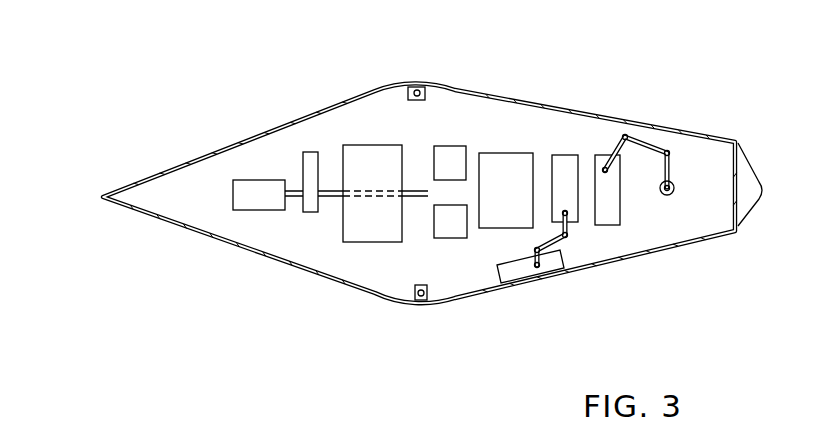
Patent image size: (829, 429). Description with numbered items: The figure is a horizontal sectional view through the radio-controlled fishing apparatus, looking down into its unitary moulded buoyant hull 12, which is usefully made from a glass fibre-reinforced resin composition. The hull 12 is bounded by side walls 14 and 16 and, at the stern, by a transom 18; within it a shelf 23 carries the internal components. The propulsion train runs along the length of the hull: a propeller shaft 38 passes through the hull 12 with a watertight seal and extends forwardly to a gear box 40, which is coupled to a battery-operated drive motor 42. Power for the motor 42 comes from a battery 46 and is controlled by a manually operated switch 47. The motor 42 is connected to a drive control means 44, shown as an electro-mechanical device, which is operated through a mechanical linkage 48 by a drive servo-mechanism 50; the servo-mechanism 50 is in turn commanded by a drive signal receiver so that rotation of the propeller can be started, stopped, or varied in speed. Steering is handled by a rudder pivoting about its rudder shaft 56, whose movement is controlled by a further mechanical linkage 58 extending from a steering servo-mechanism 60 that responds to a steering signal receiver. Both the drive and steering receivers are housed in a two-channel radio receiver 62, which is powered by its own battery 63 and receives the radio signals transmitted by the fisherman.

The hull 12 is at (565, 87).
The side wall 14 is at (248, 255).
The side wall 16 is at (458, 86).
The transom 18 is at (739, 212).
The shelf 23 is at (409, 273).
The propeller shaft 38 is at (293, 198).
The gear box 40 is at (308, 158).
The drive motor 42 is at (245, 185).
The drive control means 44 is at (518, 272).
The battery 46 is at (367, 145).
The manually operated switch 47 is at (448, 232).
The mechanical linkage 48 is at (560, 247).
The drive servo-mechanism 50 is at (566, 160).
The rudder shaft 56 is at (667, 197).
The mechanical linkage 58 is at (645, 138).
The steering servo-mechanism 60 is at (608, 220).
The 2-channel radio receiver 62 is at (517, 199).
The battery 63 is at (448, 150).